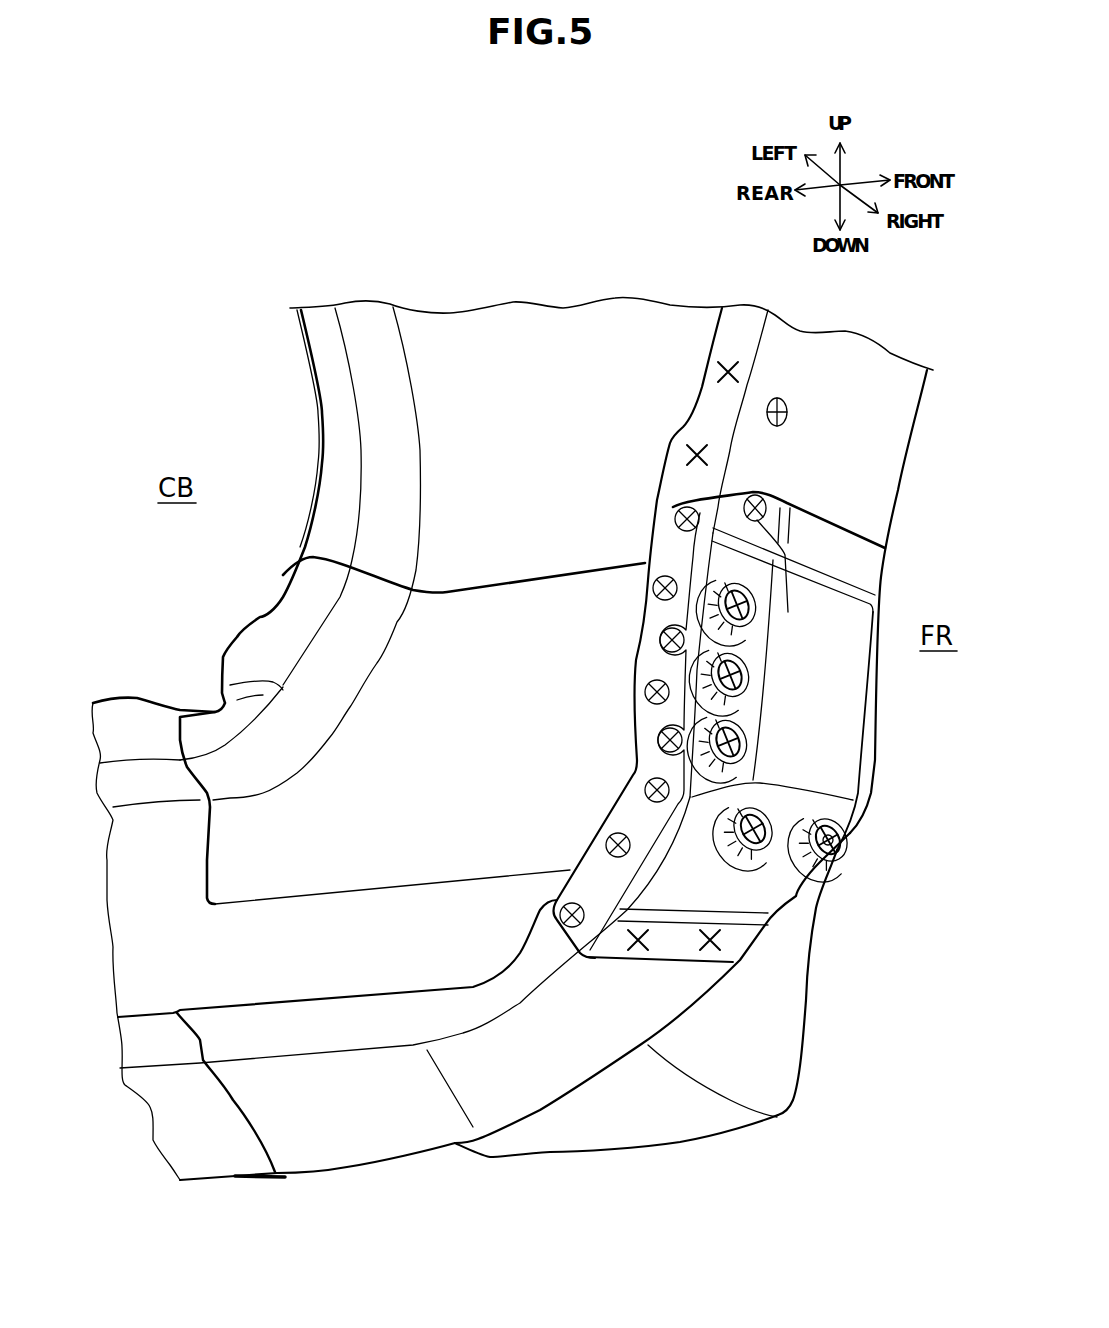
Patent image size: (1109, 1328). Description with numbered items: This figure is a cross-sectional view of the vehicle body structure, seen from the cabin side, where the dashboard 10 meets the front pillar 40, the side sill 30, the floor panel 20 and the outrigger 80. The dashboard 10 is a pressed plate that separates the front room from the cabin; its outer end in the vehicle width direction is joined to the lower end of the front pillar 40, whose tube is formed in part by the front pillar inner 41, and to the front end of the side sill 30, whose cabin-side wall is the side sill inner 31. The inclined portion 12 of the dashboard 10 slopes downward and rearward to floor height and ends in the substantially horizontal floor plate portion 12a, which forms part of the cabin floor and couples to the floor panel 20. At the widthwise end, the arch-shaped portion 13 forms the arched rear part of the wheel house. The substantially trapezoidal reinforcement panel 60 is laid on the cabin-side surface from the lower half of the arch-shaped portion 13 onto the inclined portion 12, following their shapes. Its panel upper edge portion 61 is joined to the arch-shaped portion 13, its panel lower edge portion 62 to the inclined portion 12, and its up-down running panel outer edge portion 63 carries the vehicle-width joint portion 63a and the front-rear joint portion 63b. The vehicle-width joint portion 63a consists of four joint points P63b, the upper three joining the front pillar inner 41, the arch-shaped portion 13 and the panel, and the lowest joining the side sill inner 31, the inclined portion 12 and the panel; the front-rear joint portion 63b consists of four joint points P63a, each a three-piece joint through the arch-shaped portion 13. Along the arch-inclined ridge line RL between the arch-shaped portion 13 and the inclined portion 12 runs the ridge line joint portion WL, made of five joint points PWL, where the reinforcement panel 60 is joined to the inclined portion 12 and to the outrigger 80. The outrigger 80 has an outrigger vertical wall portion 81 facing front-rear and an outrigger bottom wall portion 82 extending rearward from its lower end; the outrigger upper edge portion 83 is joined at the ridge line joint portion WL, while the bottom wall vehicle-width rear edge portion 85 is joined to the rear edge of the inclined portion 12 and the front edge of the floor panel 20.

The dashboard 10 is at (922, 455).
The inclined portion 12 is at (380, 1127).
The floor plate portion 12a is at (325, 1143).
The arch-shaped portion 13 is at (873, 387).
The floor panel 20 is at (185, 1128).
The side sill 30 is at (116, 686).
The side sill inner 31 is at (152, 922).
The front pillar 40 is at (294, 413).
The front pillar inner 41 is at (547, 345).
The reinforcement panel 60 is at (817, 496).
The panel upper edge portion 61 is at (850, 553).
The panel lower edge portion 62 is at (673, 943).
The panel outer edge portion 63 is at (553, 592).
The vehicle-width joint portion 63a is at (660, 639).
The front-rear joint portion 63b is at (713, 675).
The outrigger 80 is at (823, 1048).
The outrigger vertical wall portion 81 is at (813, 983).
The outrigger bottom wall portion 82 is at (668, 1145).
The outrigger upper edge portion 83 is at (834, 845).
The bottom wall vehicle-width rear edge portion 85 is at (260, 1180).
The joint points P63a is at (675, 514).
The joint points P63b is at (752, 607).
The ridge line joint portion WL is at (705, 832).
The joint points PWL is at (743, 855).
The arch-inclined ridge line RL is at (872, 797).